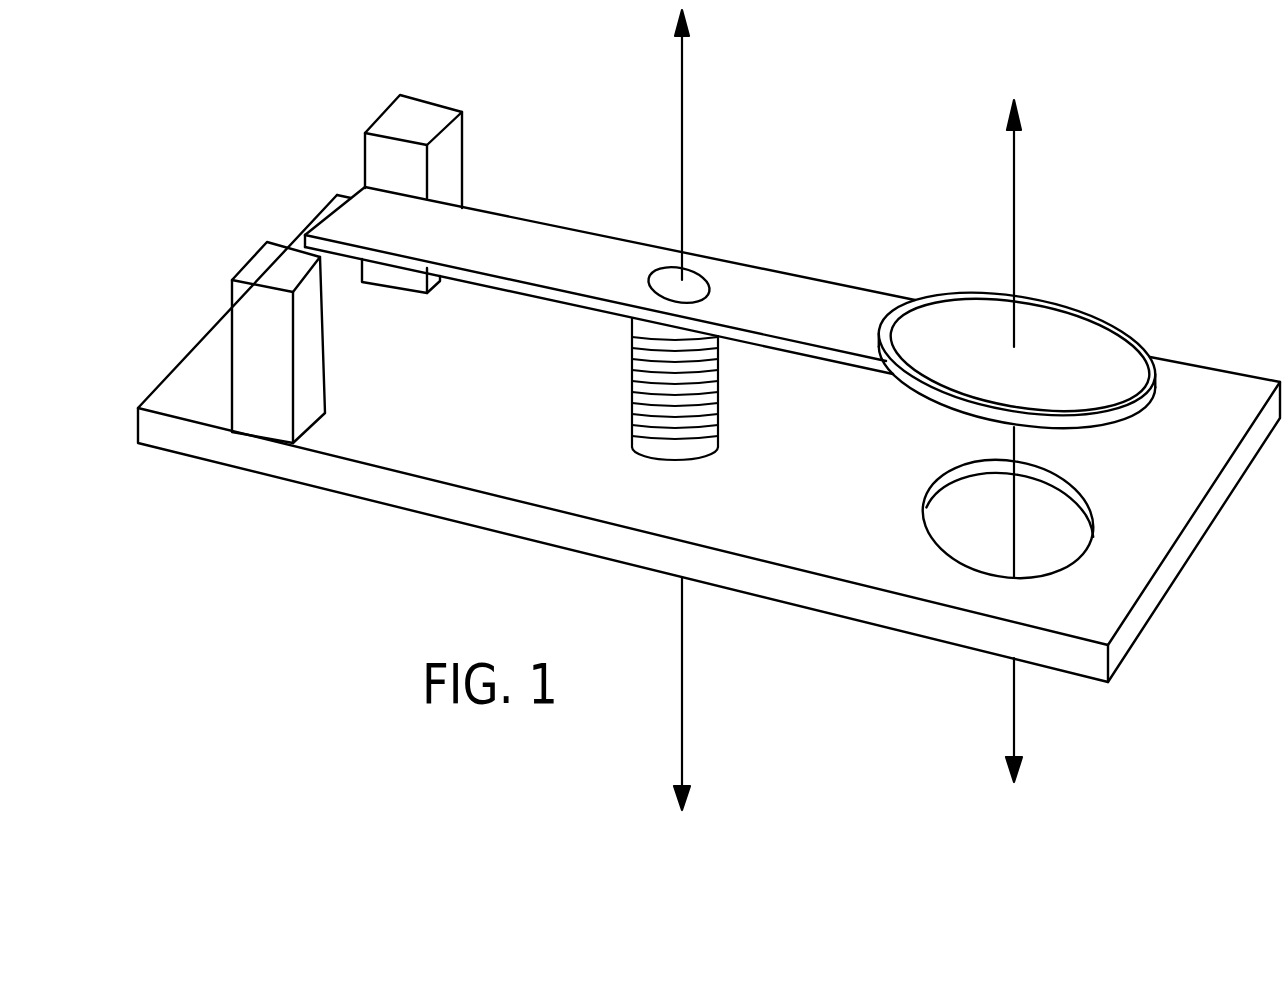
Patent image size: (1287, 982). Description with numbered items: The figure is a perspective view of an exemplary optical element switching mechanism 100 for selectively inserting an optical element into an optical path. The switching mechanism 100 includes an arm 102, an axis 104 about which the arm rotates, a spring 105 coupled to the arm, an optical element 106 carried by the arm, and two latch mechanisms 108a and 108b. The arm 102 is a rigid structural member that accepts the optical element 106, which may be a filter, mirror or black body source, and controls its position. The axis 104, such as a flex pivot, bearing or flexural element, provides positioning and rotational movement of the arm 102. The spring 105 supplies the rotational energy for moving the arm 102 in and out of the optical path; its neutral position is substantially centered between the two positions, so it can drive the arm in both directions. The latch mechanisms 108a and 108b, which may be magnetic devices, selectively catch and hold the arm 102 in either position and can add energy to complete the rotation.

The optical element switching mechanism 100 is at (786, 92).
The arm 102 is at (797, 272).
The axis 104 is at (687, 263).
The spring 105 is at (632, 384).
The optical element 106 is at (958, 327).
The latch mechanism 108a is at (222, 238).
The latch mechanism 108b is at (342, 102).